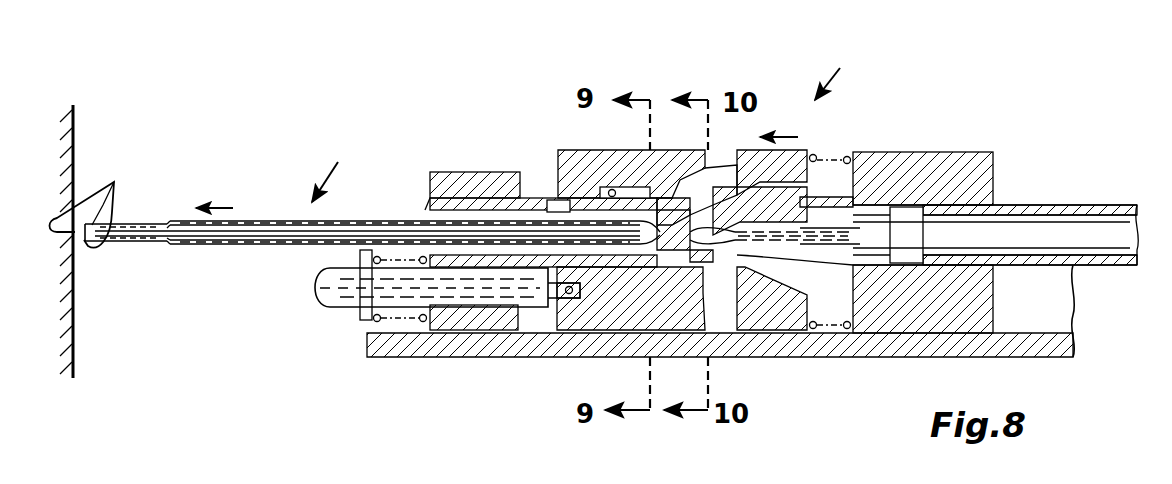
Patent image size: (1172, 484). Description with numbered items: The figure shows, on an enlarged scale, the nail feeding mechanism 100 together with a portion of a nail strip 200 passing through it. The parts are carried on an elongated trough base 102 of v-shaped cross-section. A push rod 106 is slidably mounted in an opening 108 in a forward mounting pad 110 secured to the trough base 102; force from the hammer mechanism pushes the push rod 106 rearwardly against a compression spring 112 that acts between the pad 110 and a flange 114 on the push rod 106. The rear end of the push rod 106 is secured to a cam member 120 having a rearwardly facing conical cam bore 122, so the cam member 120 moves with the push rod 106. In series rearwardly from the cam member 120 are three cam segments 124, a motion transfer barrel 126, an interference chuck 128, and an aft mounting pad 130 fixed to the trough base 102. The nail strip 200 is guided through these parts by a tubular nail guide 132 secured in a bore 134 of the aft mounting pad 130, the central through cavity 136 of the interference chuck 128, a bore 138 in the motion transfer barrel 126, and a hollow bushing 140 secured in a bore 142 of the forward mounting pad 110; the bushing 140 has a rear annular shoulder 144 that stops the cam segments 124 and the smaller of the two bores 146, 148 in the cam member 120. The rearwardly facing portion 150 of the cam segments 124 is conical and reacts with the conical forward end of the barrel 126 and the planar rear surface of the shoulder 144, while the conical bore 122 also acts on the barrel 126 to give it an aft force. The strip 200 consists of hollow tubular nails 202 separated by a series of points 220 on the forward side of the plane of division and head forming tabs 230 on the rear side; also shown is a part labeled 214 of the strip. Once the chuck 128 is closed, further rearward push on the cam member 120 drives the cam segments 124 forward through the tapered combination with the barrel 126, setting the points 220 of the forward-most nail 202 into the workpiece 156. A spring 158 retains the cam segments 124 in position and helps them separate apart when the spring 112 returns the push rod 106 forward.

The nail feeding mechanism 100 is at (841, 69).
The trough base 102 is at (1045, 360).
The push rod 106 is at (338, 305).
The opening 108 is at (462, 297).
The forward mounting pad 110 is at (455, 180).
The compression spring 112 is at (383, 330).
The flange 114 is at (340, 280).
The cam member 120 is at (600, 300).
The conical cam bore 122 is at (660, 275).
The cam segments 124 is at (700, 160).
The motion transfer barrel 126 is at (820, 157).
The interference chuck 128 is at (820, 200).
The aft mounting pad 130 is at (940, 160).
The tubular nail guide 132 is at (1073, 208).
The bore 134 is at (957, 223).
The central through cavity 136 is at (833, 240).
The bore 138 is at (693, 300).
The hollow bushing 140 is at (497, 200).
The bore 142 is at (428, 216).
The rear annular shoulder 144 is at (670, 160).
The bore 146 is at (545, 208).
The bore 148 is at (613, 158).
The conical surface 150 is at (632, 452).
The workpiece 156 is at (80, 309).
The spring 158 is at (820, 165).
The nail strip 200 is at (341, 166).
The hollow tubular nails 202 is at (248, 220).
The inner tube 214 is at (136, 222).
The points 220 is at (100, 192).
The head forming tabs 230 is at (640, 250).